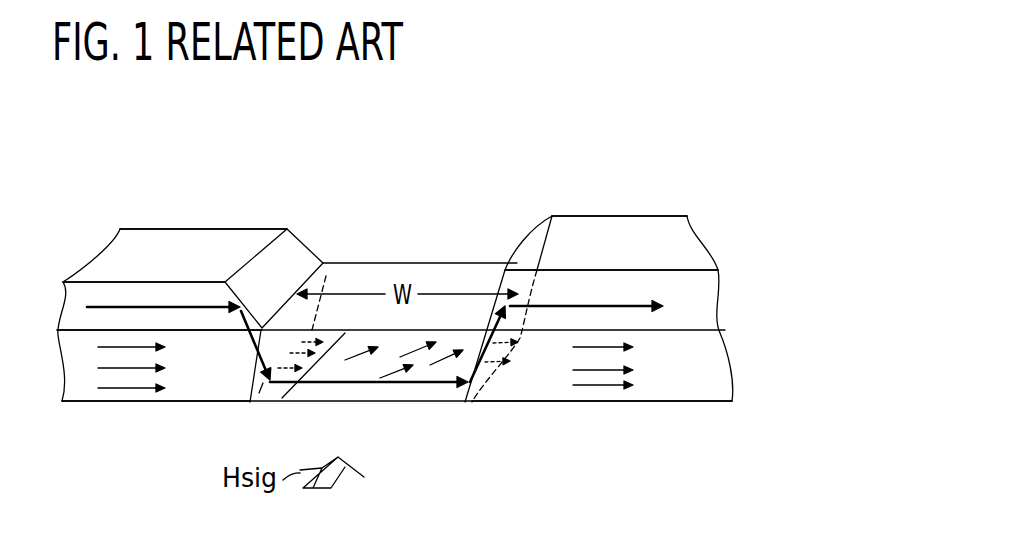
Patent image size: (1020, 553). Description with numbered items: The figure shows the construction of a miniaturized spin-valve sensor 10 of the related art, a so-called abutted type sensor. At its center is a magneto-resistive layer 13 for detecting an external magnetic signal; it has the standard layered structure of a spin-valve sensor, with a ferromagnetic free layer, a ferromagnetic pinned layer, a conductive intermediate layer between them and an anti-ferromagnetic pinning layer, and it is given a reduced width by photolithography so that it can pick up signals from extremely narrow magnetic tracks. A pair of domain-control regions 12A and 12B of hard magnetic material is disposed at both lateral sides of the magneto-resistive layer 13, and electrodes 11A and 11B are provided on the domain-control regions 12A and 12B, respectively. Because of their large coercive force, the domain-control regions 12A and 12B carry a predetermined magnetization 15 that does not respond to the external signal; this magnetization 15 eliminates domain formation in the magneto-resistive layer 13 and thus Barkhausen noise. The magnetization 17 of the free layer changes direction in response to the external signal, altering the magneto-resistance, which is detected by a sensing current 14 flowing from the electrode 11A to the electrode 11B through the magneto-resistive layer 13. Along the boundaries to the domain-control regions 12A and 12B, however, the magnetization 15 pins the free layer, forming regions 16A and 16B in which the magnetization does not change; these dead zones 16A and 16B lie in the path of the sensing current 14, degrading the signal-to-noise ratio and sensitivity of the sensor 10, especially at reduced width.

The spin-valve sensor 10 is at (415, 150).
The electrode 11A is at (618, 235).
The electrode 11B is at (201, 255).
The domain-control region 12A is at (542, 388).
The domain-control region 12B is at (187, 383).
The magneto-resistive layer 13 is at (392, 272).
The sensing current 14 is at (110, 307).
The magnetization 15 is at (105, 390).
The region 16A is at (507, 266).
The region 16B is at (268, 385).
The magnetization 17 is at (401, 338).